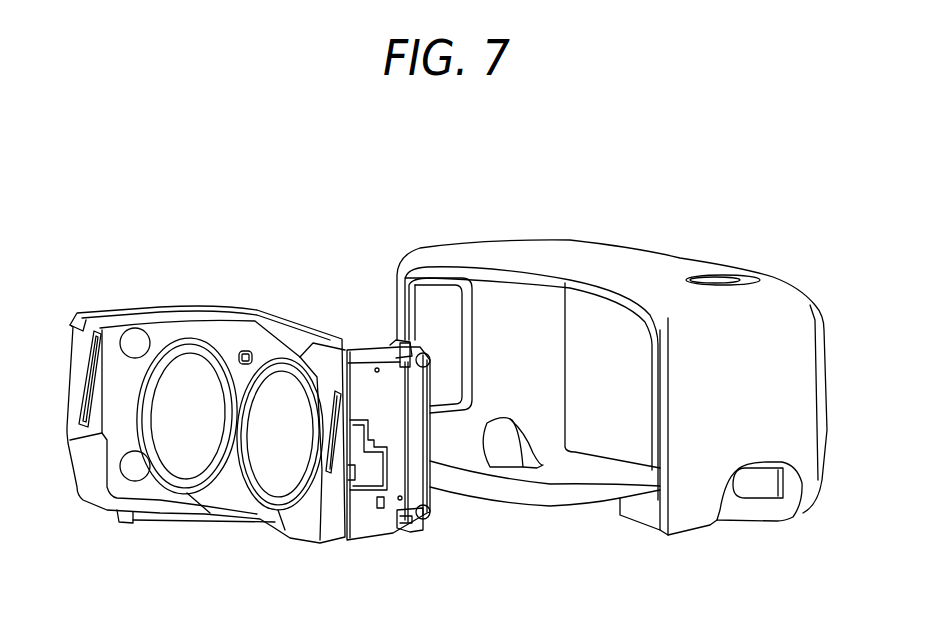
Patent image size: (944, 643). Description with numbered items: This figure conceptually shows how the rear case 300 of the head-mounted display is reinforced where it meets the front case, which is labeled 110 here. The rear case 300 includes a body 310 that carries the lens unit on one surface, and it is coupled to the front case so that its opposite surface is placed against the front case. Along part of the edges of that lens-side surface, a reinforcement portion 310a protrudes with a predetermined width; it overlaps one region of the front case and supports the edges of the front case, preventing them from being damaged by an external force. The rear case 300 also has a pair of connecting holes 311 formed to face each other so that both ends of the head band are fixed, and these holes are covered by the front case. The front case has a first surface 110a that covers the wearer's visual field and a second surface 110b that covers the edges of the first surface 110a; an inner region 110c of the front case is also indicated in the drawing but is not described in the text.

The housing 110 is at (807, 522).
The first surface 110a is at (622, 422).
The second surface 110b is at (802, 357).
The inner wall of housing 110c is at (593, 346).
The rear case 300 is at (342, 543).
The body 310 is at (325, 533).
The reinforcement portion 310a is at (312, 365).
The connecting holes 311 is at (83, 407).